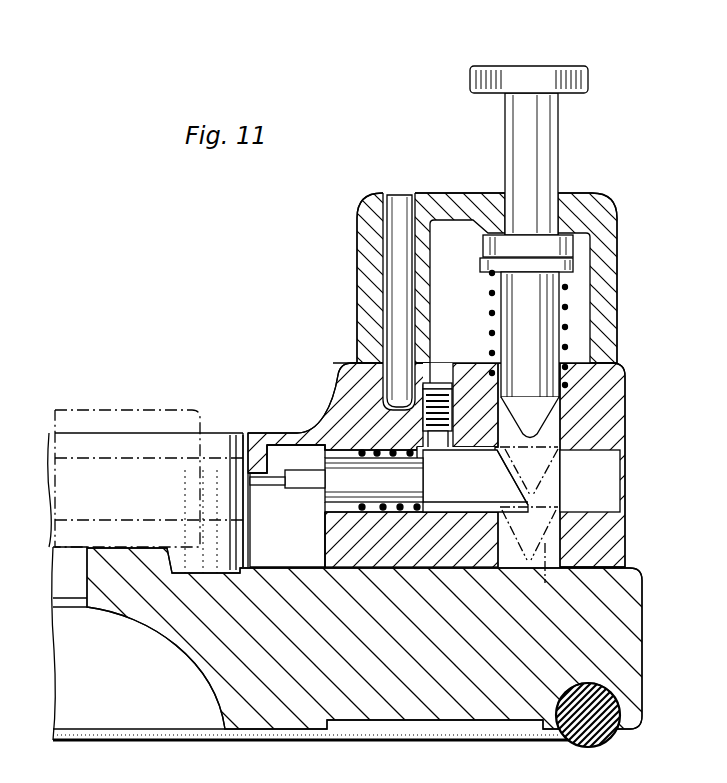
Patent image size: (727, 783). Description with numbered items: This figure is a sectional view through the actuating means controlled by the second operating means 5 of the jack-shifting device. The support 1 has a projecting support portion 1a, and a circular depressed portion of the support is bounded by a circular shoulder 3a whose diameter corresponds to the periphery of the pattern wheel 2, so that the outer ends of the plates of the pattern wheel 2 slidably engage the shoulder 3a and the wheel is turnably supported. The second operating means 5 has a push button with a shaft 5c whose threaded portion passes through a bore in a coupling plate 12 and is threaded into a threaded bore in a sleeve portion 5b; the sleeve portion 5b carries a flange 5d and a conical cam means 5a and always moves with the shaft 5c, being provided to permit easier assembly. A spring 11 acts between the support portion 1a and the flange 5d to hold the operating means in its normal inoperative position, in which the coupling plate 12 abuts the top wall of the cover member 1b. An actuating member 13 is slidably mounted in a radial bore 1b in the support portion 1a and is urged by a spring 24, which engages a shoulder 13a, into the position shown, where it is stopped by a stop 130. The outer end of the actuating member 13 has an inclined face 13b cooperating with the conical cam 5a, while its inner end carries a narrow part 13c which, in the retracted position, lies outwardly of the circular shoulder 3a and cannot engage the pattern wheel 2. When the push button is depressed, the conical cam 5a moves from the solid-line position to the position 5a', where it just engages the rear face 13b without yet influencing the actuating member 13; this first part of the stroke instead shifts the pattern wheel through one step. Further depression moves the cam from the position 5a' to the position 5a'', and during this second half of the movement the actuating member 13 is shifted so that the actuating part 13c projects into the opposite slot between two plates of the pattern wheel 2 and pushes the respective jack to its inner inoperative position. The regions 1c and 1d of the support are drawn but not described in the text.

The support 1 is at (302, 352).
The projecting support portion 1a is at (628, 668).
The radial bore 1b is at (390, 513).
The bore in housing 1c is at (360, 508).
The shoulder of housing 1d is at (347, 453).
The pattern wheel 2 is at (150, 412).
The circular shoulder 3a is at (250, 453).
The second operating means 5 is at (584, 58).
The conical cam means 5a is at (530, 397).
The intermediate position of conical cam 5a' is at (549, 471).
The final position of conical cam 5a'' is at (540, 557).
The sleeve portion 5b is at (535, 337).
The shaft 5c is at (545, 150).
The flange 5d is at (574, 266).
The spring 11 is at (566, 327).
The coupling plate 12 is at (572, 252).
The actuating member 13 is at (470, 487).
The shoulder 13a is at (423, 478).
The inclined face 13b is at (530, 480).
The narrow part 13c is at (277, 480).
The spring 24 is at (370, 509).
The stop 130 is at (445, 388).